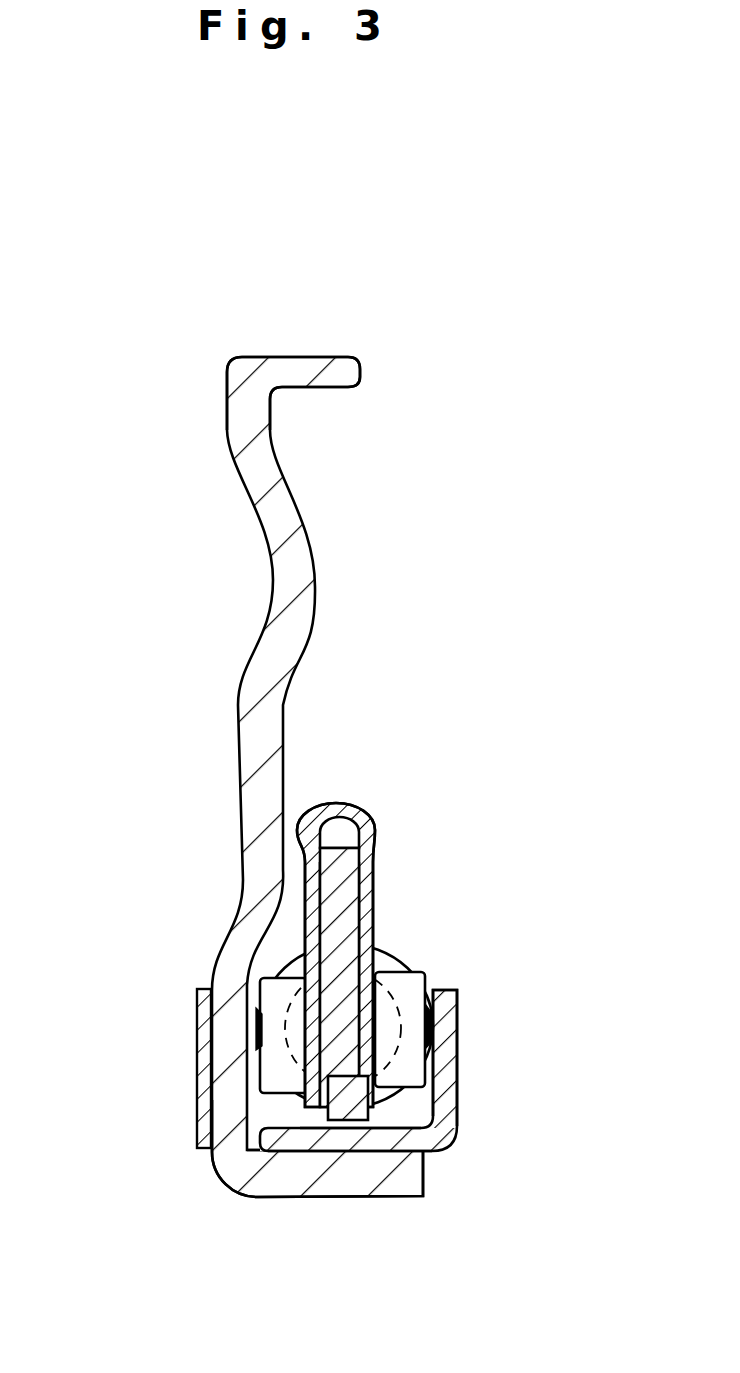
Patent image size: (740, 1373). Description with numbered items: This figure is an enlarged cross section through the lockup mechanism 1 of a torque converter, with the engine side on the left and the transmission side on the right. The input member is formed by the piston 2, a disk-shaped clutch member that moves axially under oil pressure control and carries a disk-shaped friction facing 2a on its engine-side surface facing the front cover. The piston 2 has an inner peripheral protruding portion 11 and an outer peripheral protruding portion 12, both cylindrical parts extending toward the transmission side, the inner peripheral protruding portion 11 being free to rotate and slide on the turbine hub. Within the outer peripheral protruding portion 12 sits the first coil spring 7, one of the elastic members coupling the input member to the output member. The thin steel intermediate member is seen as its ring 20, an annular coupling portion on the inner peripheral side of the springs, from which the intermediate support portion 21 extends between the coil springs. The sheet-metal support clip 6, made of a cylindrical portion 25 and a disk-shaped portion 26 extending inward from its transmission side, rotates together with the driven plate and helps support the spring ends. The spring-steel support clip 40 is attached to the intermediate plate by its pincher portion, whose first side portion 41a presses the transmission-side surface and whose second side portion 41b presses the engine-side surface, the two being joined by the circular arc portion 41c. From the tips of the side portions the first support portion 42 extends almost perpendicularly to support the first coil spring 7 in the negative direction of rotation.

The lockup mechanism 1 is at (426, 577).
The piston 2 is at (247, 698).
The friction facing 2a is at (197, 1064).
The support clip 6 is at (460, 1132).
The first coil spring 7 is at (300, 966).
The inner peripheral protruding portion 11 is at (298, 370).
The outer peripheral protruding portion 12 is at (278, 1180).
The ring 20 is at (362, 897).
The intermediate support portion 21 is at (375, 1128).
The cylindrical portion 25 is at (344, 1140).
The disk-shaped portion 26 is at (452, 1023).
The support clip 40 is at (380, 793).
The first side portion 41a is at (372, 930).
The second side portion 41b is at (300, 952).
The circular arc portion 41c is at (325, 808).
The first support portion 42 is at (270, 1008).